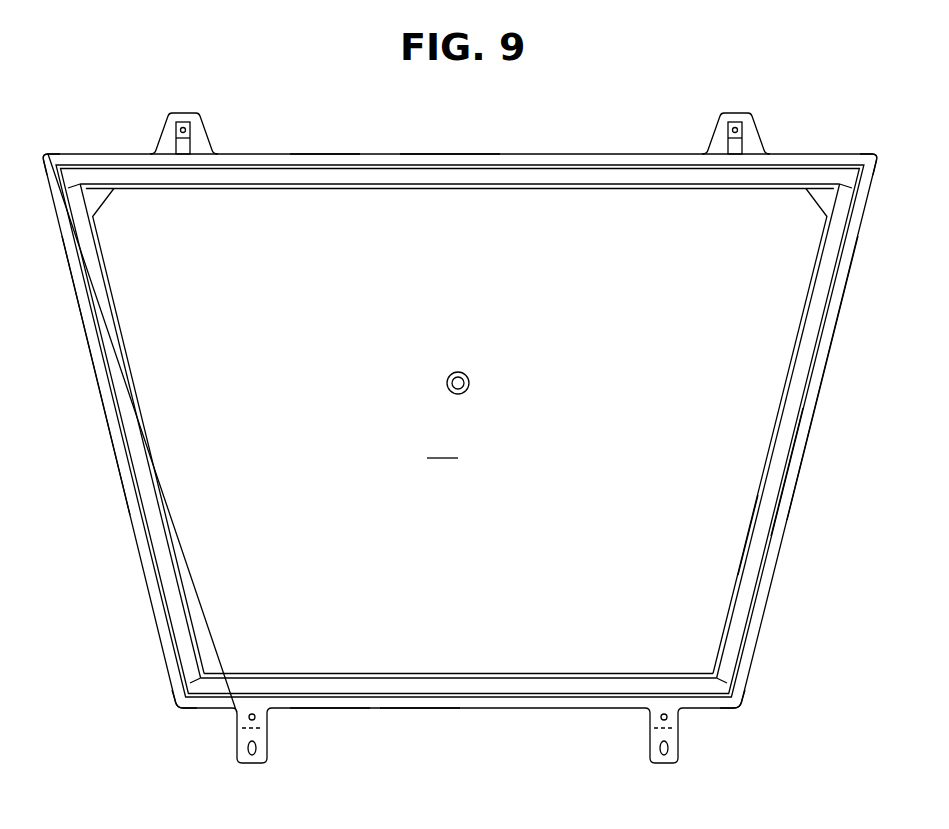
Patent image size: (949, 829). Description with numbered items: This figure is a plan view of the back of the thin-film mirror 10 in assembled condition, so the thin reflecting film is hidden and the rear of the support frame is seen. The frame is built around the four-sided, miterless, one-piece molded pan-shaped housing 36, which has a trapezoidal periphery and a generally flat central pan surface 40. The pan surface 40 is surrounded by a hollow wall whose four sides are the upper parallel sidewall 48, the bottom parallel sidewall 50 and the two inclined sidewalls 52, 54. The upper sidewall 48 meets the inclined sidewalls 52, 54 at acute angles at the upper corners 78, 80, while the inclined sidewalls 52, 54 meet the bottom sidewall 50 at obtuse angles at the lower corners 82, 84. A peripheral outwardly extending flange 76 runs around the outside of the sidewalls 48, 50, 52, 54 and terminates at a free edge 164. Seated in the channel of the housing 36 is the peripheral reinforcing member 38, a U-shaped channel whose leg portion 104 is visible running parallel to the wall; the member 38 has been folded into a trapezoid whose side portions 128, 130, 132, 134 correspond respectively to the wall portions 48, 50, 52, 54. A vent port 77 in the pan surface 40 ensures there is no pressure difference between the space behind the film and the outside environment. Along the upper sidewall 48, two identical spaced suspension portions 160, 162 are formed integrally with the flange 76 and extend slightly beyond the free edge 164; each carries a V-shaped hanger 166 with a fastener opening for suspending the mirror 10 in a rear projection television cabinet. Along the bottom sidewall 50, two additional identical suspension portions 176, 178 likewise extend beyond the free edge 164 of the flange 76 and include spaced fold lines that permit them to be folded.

The thin-film mirror 10 is at (610, 85).
The pan-shaped housing 36 is at (722, 568).
The peripheral reinforcing member 38 is at (777, 507).
The pan surface 40 is at (442, 447).
The upper parallel sidewall 48 is at (325, 143).
The bottom parallel sidewall 50 is at (419, 719).
The inclined sidewall 52 is at (102, 456).
The inclined sidewall 54 is at (817, 467).
The peripheral outwardly extending flange 76 is at (258, 152).
The vent port 77 is at (470, 388).
The corner 78 is at (47, 152).
The corner 80 is at (880, 155).
The corner 82 is at (744, 705).
The corner 84 is at (172, 710).
The leg portion 104 is at (103, 333).
The side portion 128 is at (325, 201).
The side portion 130 is at (419, 659).
The side portion 132 is at (155, 429).
The side portion 134 is at (777, 372).
The suspension portion 160 is at (735, 112).
The suspension portion 162 is at (159, 104).
The free edge 164 is at (443, 152).
The V-shaped hanger 166 is at (177, 143).
The suspension portion 176 is at (680, 745).
The suspension portion 178 is at (237, 748).